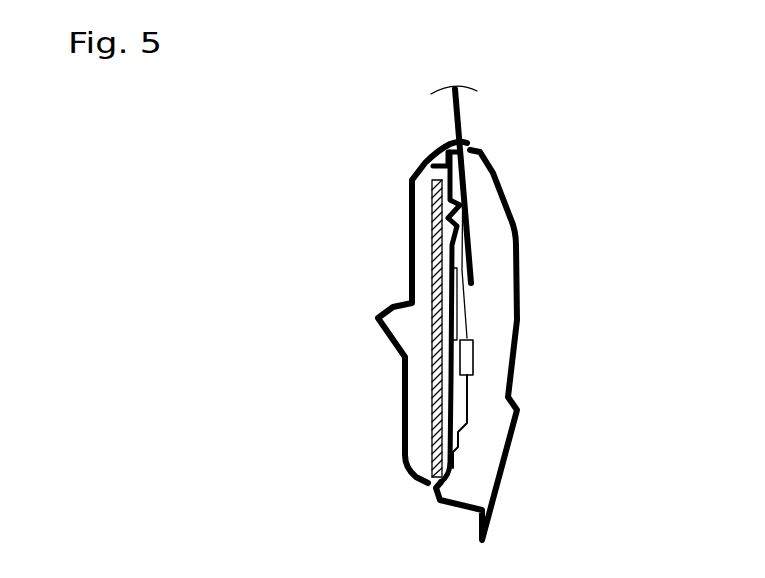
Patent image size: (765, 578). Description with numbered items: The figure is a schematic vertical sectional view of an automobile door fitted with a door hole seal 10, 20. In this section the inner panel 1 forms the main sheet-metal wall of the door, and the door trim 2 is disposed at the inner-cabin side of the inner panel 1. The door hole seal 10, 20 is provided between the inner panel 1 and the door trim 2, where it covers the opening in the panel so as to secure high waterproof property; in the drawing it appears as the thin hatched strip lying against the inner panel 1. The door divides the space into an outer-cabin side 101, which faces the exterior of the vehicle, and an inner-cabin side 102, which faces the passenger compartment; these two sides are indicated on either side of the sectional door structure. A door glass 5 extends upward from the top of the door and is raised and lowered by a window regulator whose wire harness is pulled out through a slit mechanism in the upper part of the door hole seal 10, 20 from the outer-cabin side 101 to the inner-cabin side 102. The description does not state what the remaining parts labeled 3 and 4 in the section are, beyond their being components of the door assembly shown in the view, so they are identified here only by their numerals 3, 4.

The inner panel 1 is at (452, 198).
The door trim 2 is at (411, 255).
The second housing part 3 is at (518, 260).
The connecting element 4 is at (467, 322).
The door glass 5 is at (460, 133).
The door hole seal 10 is at (371, 328).
The door hole seal 20 is at (432, 230).
The outer-cabin side 101 is at (622, 377).
The inner-cabin side 102 is at (357, 378).